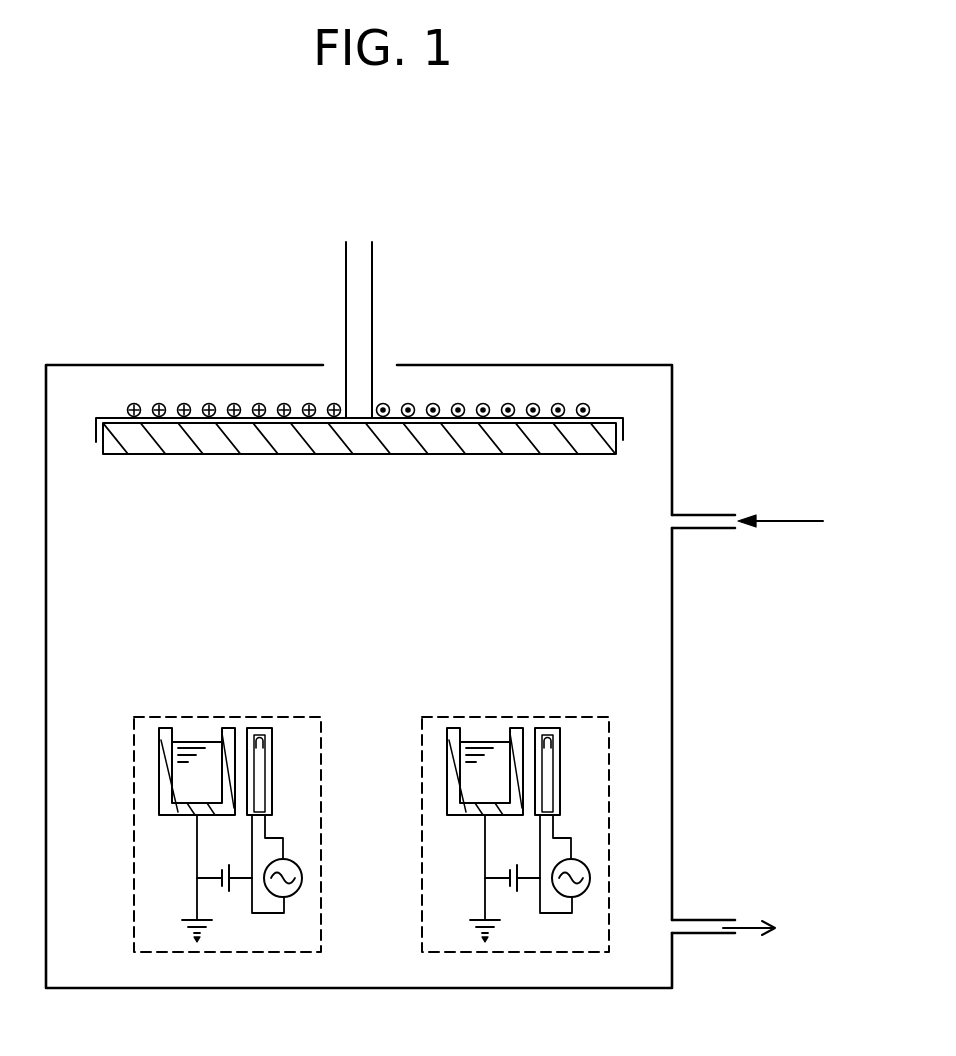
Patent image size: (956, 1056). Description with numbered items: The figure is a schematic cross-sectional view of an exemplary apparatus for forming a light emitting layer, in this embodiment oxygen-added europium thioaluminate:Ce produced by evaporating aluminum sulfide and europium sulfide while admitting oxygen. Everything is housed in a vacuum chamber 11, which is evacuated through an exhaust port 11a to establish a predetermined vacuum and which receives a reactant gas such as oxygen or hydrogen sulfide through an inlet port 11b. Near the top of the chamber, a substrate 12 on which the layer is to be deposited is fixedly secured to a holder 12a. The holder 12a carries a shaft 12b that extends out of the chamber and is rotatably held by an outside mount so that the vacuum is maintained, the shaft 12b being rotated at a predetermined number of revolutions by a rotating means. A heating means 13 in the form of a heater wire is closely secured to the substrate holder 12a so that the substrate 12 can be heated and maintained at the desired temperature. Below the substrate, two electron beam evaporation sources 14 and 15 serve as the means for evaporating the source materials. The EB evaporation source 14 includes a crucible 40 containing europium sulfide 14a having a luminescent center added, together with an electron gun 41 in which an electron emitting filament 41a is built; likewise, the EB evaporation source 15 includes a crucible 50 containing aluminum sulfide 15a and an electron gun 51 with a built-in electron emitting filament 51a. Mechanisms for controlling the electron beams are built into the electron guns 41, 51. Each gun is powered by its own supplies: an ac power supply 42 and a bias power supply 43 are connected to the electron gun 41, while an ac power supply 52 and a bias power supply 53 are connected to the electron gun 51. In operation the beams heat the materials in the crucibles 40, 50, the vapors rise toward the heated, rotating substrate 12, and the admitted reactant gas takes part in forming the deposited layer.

The vacuum chamber 11 is at (575, 365).
The exhaust port 11a is at (700, 933).
The inlet port 11b is at (700, 515).
The substrate 12 is at (390, 454).
The holder 12a is at (623, 425).
The shaft 12b is at (372, 300).
The heating means 13 is at (458, 404).
The EB evaporation source 14 is at (493, 717).
The europium sulfide 14a is at (464, 750).
The EB evaporation source 15 is at (205, 717).
The aluminum sulfide 15a is at (178, 752).
The crucible 40 is at (455, 810).
The electron gun 41 is at (560, 730).
The electron emitting filament 41a is at (553, 742).
The ac power supply 42 is at (590, 878).
The bias power supply 43 is at (520, 888).
The crucible 50 is at (168, 810).
The electron gun 51 is at (272, 730).
The electron emitting filament 51a is at (265, 742).
The ac power supply 52 is at (302, 878).
The bias power supply 53 is at (232, 888).